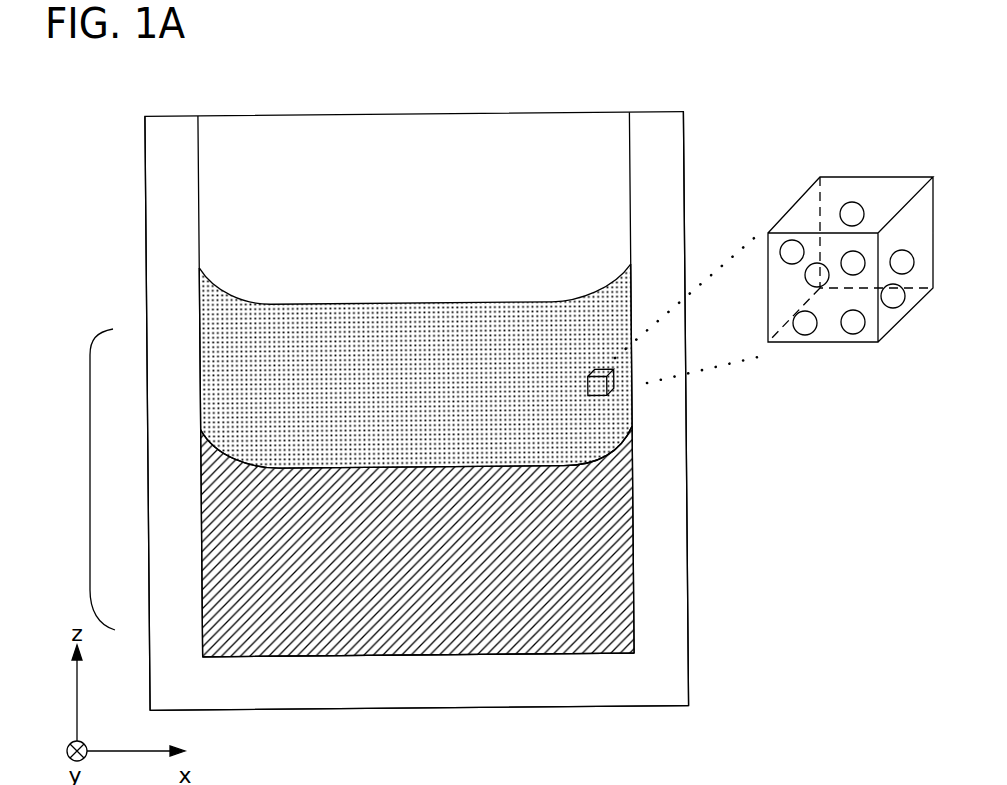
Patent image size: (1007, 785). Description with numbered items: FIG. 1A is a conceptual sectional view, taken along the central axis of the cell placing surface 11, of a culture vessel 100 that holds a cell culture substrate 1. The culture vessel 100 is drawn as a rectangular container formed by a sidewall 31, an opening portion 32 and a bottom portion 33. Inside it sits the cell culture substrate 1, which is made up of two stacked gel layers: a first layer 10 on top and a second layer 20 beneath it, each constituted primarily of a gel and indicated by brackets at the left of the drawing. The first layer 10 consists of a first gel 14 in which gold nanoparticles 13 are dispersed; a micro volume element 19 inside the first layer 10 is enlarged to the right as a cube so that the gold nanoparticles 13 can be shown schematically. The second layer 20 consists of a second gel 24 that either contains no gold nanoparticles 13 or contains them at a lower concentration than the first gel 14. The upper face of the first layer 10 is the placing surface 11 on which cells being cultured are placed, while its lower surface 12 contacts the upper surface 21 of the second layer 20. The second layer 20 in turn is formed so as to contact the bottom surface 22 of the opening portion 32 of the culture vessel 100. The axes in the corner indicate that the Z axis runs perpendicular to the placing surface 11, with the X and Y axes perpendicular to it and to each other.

The culture vessel 100 is at (686, 74).
The cell culture substrate 1 is at (90, 497).
The first layer 10 is at (190, 299).
The placing surface 11 is at (347, 307).
The lower surface 12 is at (537, 470).
The upper surface 21 is at (537, 470).
The gold nanoparticles 13 is at (893, 306).
The first gel 14 is at (452, 342).
The micro volume element 19 is at (607, 393).
The second layer 20 is at (190, 470).
The bottom surface 22 is at (292, 657).
The second gel 24 is at (618, 610).
The sidewall 31 is at (178, 125).
The opening portion 32 is at (630, 140).
The bottom portion 33 is at (632, 692).